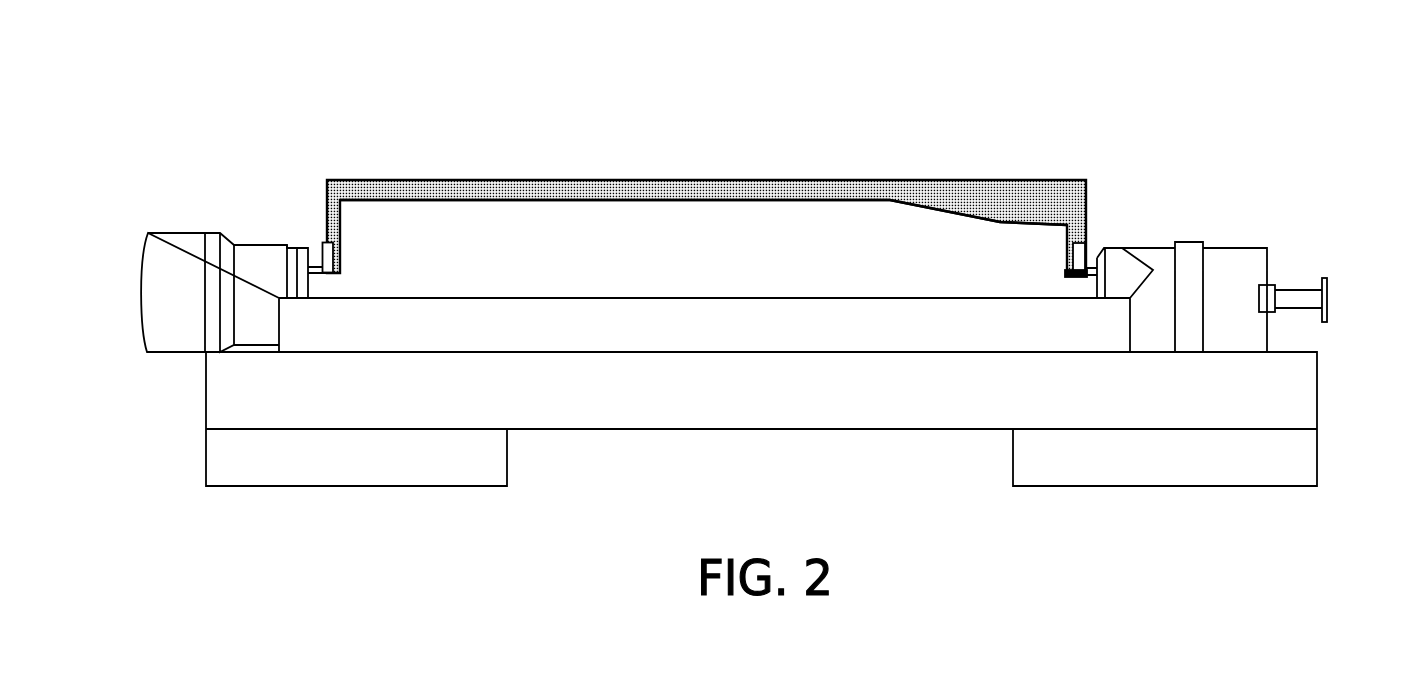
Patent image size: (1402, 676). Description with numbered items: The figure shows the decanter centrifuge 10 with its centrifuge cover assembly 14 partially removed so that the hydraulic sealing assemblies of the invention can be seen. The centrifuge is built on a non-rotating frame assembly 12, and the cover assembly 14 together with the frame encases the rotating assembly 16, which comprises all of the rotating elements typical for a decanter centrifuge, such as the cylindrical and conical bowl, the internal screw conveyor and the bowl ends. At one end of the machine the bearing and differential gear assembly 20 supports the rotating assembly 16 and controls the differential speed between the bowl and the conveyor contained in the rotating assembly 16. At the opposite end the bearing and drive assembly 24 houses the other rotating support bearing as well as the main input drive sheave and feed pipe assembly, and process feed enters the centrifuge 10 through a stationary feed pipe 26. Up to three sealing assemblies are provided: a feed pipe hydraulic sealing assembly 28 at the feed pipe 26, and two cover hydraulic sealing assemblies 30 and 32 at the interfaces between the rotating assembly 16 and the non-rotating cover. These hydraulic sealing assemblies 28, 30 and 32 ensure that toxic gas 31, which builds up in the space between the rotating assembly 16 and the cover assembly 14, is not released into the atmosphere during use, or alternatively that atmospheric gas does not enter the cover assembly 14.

The decanter centrifuge 10 is at (648, 84).
The frame assembly 12 is at (205, 489).
The centrifuge cover assembly 14 is at (706, 201).
The rotating assembly 16 is at (760, 248).
The bearing and differential gear assembly 20 is at (140, 275).
The bearing and drive assembly 24 is at (1160, 245).
The stationary feed pipe 26 is at (1328, 317).
The feed pipe hydraulic sealing assembly 28 is at (1273, 285).
The cover hydraulic sealing assembly 30 is at (327, 257).
The toxic gas 31 is at (538, 188).
The cover hydraulic sealing assembly 32 is at (1080, 258).